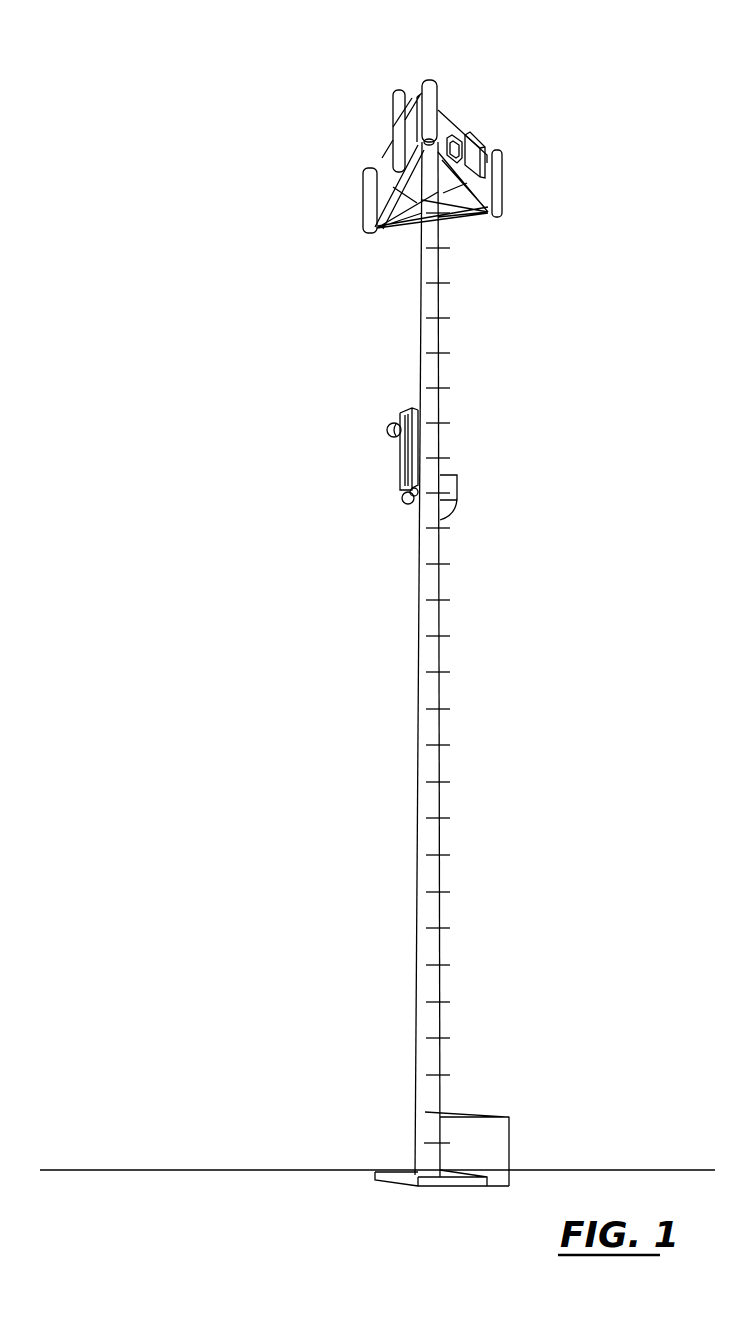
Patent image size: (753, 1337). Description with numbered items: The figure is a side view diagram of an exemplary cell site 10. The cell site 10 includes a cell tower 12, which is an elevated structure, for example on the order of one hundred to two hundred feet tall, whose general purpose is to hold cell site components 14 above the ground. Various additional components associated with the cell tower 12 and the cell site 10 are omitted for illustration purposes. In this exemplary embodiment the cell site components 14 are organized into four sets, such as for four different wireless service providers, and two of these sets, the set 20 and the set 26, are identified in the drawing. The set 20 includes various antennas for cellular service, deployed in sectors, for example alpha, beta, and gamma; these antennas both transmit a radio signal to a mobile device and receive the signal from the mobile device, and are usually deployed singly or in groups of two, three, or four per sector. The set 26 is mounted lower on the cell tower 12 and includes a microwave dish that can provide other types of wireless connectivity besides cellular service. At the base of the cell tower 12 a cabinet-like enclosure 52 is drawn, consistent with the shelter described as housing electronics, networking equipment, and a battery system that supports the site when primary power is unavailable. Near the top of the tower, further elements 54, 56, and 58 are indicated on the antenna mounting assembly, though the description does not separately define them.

The cell site 10 is at (593, 322).
The cell tower 12 is at (432, 835).
The cell site components 14 is at (532, 145).
The set of cell site components 20 is at (420, 95).
The set of cell site components 26 is at (402, 460).
The equipment cabinet 52 is at (509, 1138).
The antenna 54 is at (381, 157).
The mounting plate 56 is at (448, 125).
The truss platform 58 is at (377, 228).